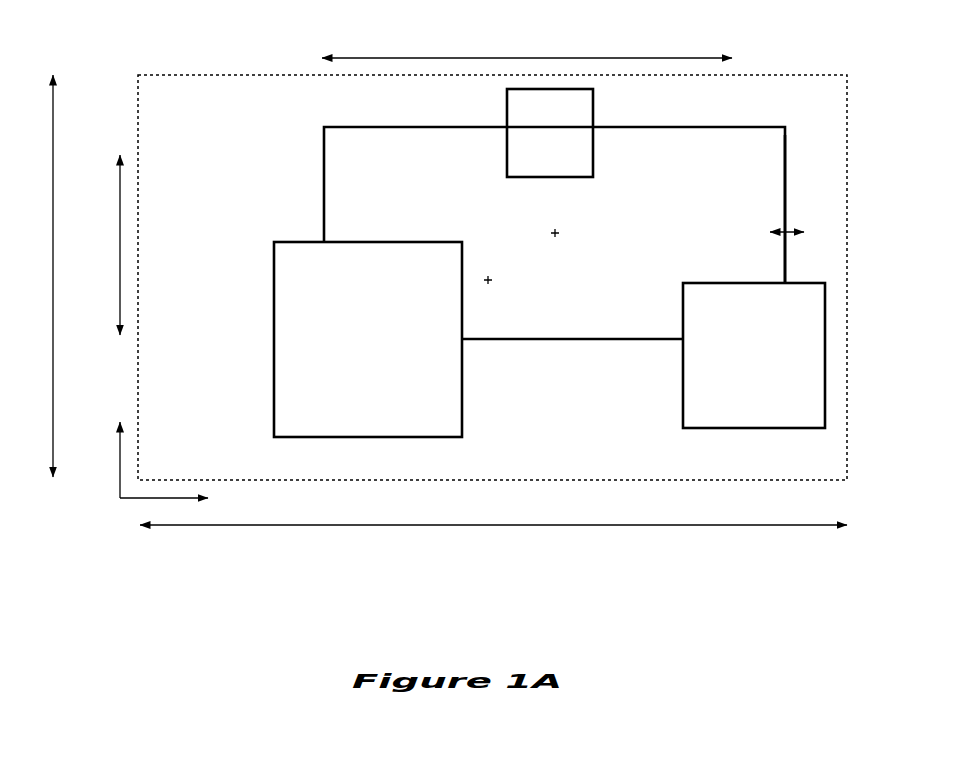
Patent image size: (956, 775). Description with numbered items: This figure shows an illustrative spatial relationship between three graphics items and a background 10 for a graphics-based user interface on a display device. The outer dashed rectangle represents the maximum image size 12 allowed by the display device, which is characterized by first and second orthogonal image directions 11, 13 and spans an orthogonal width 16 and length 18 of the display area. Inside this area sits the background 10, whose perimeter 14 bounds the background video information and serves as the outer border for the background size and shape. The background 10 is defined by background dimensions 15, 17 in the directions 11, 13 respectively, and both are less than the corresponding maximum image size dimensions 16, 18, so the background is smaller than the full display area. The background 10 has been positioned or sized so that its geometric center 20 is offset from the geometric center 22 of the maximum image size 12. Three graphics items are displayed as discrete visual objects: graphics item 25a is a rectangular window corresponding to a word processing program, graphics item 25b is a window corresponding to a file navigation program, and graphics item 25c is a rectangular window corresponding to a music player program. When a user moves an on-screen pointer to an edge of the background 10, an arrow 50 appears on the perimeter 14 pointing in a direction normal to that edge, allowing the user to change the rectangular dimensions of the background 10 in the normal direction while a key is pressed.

The background 10 is at (723, 127).
The first orthogonal image direction 11 is at (119, 446).
The maximum image size 12 is at (767, 75).
The second orthogonal image direction 13 is at (148, 500).
The perimeter 14 is at (786, 163).
The background dimension 15 is at (621, 57).
The width 16 is at (453, 526).
The background dimension 17 is at (119, 230).
The length 18 is at (52, 188).
The geometric center of background 20 is at (557, 228).
The geometric center of maximum image size 22 is at (491, 276).
The graphics item 25a is at (362, 240).
The graphics item 25b is at (594, 117).
The graphics item 25c is at (707, 283).
The arrow 50 is at (787, 226).